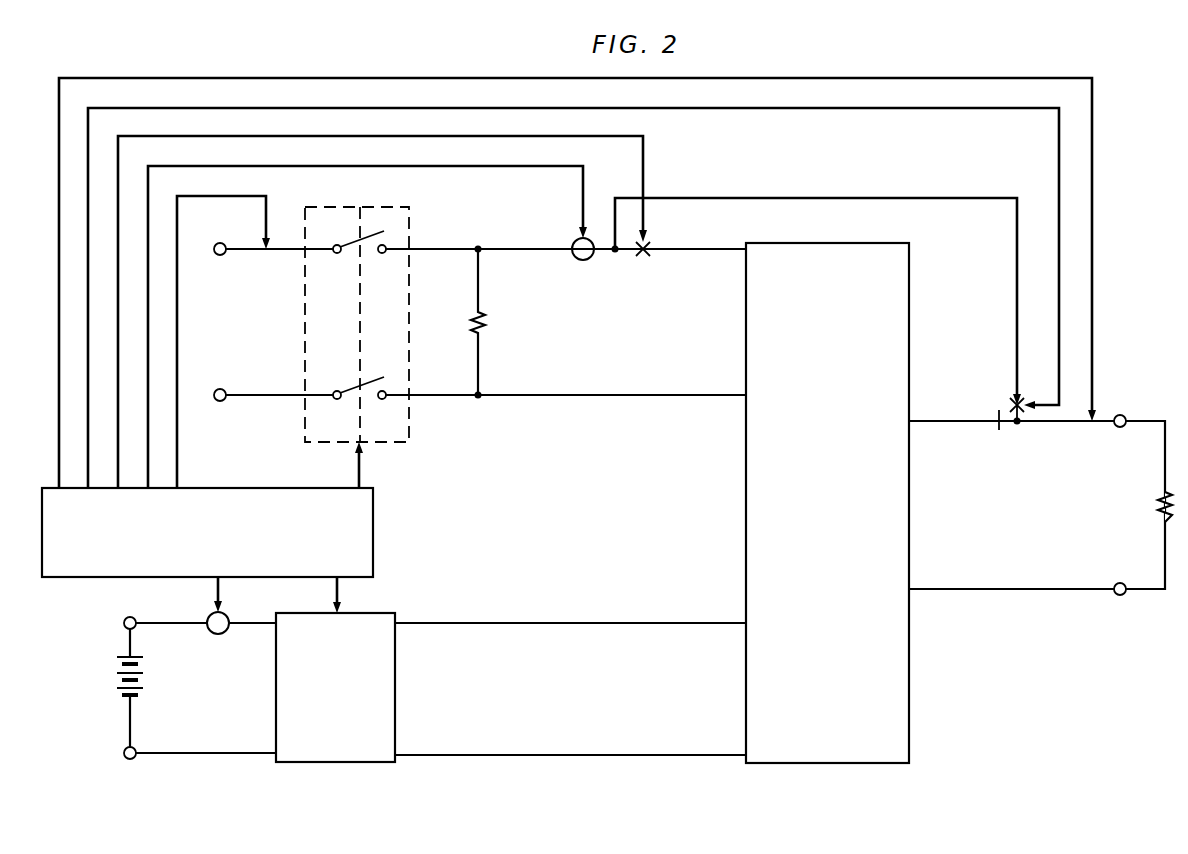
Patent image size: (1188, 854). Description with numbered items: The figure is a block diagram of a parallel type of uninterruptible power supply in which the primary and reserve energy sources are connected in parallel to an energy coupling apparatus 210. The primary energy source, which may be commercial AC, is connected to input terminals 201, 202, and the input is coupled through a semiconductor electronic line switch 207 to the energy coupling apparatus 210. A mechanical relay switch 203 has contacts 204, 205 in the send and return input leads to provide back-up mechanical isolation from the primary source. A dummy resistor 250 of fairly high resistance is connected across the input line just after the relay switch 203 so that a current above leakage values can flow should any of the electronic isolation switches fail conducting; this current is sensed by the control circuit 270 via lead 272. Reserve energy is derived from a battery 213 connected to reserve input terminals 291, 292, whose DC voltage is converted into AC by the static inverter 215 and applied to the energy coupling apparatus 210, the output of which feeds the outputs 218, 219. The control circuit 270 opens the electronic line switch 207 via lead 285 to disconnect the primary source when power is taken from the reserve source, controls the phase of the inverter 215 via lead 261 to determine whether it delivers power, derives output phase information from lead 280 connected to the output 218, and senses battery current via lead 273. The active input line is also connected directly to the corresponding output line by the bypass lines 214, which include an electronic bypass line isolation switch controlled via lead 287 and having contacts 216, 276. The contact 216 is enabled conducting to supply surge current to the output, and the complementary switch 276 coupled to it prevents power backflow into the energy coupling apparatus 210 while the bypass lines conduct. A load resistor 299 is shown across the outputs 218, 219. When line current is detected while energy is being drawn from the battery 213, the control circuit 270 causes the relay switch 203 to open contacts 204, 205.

The input terminal 201 is at (270, 239).
The input terminal 202 is at (269, 386).
The mechanical relay switch 203 is at (357, 310).
The relay switch contact 204 is at (365, 243).
The relay switch contact 205 is at (353, 381).
The dummy resistor 250 is at (495, 322).
The lead 272 is at (583, 200).
The lead 285 is at (645, 168).
The semiconductor electronic line switch 207 is at (645, 262).
The energy coupling apparatus 210 is at (791, 242).
The bypass line 214 is at (835, 192).
The lead 287 is at (891, 110).
The lead 280 is at (1093, 198).
The bypass line isolation switch contact 216 is at (1032, 397).
The complementary switch 276 is at (1004, 433).
The output 218 is at (1123, 411).
The output 219 is at (1123, 579).
The load resistor 299 is at (1147, 507).
The control circuit 270 is at (229, 488).
The lead 273 is at (217, 598).
The lead 261 is at (340, 595).
The static inverter 215 is at (397, 653).
The reserve input terminal 291 is at (124, 623).
The reserve input terminal 292 is at (118, 753).
The battery 213 is at (150, 688).